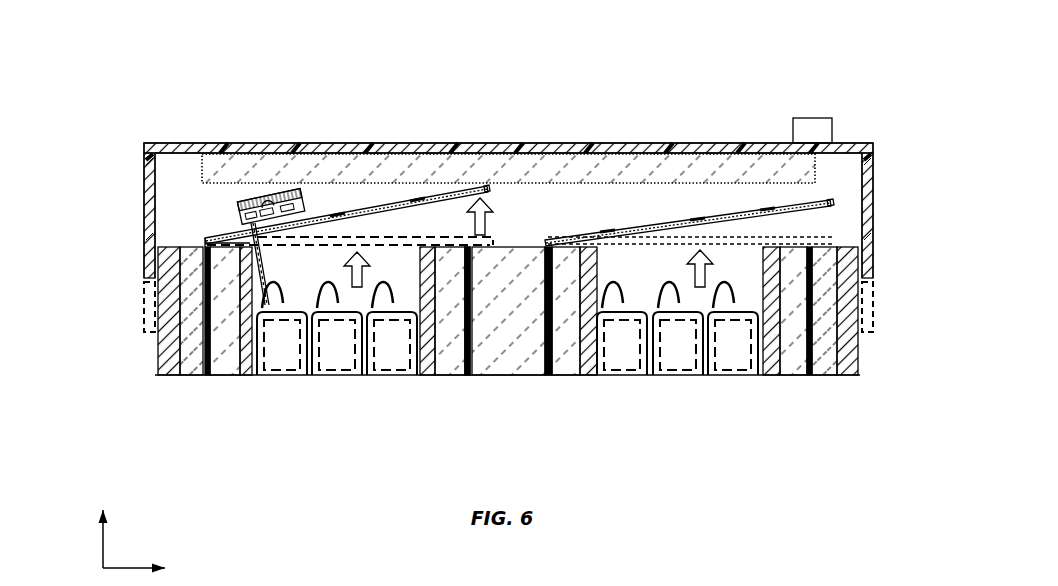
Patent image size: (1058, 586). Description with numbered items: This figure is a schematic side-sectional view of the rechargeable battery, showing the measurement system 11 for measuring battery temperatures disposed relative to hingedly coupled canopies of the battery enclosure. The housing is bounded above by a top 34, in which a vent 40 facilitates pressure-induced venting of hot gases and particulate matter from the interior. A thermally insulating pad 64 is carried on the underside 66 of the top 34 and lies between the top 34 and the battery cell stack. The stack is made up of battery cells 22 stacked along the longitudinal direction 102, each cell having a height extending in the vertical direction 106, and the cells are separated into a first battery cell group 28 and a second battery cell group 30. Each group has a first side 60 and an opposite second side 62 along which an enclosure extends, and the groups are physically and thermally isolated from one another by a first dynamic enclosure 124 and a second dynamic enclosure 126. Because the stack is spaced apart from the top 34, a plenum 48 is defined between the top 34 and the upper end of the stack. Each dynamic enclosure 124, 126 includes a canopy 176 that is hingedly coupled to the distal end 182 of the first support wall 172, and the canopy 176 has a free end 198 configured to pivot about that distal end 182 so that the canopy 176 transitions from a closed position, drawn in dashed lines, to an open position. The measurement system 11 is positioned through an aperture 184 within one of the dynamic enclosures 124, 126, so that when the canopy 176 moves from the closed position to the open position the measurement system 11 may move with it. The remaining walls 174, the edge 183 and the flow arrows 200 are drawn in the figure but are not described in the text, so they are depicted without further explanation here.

The measurement system 11 is at (308, 212).
The battery cell 22 is at (326, 359).
The first battery cell group 28 is at (327, 376).
The second battery cell group 30 is at (680, 378).
The top 34 is at (197, 143).
The vent 40 is at (818, 118).
The plenum 48 is at (178, 190).
The first side 60 is at (248, 350).
The second side 62 is at (437, 350).
The thermally insulating pad 64 is at (545, 153).
The underside 66 is at (584, 162).
The longitudinal direction 102 is at (156, 568).
The vertical direction 106 is at (105, 523).
The first dynamic enclosure 124 is at (300, 188).
The second dynamic enclosure 126 is at (677, 217).
The first support wall 172 is at (208, 375).
The partition wall 174 is at (467, 375).
The canopy 176 is at (386, 205).
The distal end 182 is at (190, 256).
The duct inlet edge 183 is at (473, 255).
The aperture 184 is at (205, 237).
The free end 198 is at (459, 188).
The air flow 200 is at (712, 257).